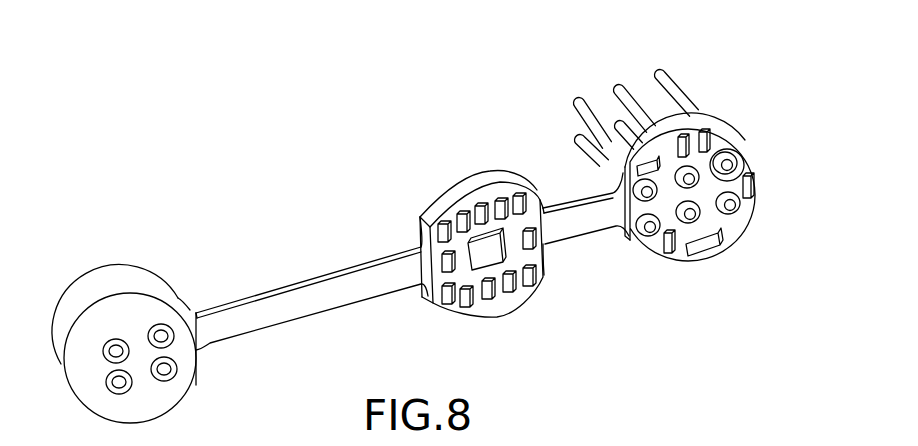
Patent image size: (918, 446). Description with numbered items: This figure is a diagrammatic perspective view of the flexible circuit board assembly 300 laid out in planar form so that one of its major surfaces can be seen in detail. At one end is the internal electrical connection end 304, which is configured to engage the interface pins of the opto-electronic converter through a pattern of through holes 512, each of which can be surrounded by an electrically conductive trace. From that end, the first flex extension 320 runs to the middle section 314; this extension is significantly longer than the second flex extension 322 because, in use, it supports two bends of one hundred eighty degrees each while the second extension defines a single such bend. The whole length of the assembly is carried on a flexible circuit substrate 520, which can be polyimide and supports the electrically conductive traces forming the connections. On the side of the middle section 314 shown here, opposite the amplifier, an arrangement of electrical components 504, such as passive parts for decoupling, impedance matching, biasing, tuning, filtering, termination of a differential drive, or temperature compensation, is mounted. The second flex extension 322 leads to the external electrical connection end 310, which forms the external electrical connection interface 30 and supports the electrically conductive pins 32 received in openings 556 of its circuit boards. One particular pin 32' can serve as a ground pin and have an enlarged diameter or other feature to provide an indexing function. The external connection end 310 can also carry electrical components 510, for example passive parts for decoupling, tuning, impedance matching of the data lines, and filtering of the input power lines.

The flexible circuit board assembly 300 is at (537, 73).
The internal electrical connection end 304 is at (134, 278).
The through holes 512 is at (172, 377).
The first flex extension 320 is at (282, 288).
The flexible circuit substrate 520 is at (328, 313).
The middle section 314 is at (470, 181).
The electrical components 504 is at (488, 303).
The second flex extension 322 is at (587, 239).
The external electrical connection end 310 is at (754, 155).
The openings 556 is at (733, 152).
The electrical components 510 is at (720, 233).
The external electrical connection interface 30 is at (698, 98).
The electrically conductive pins 32 is at (648, 78).
The indexing pin 32' is at (702, 77).